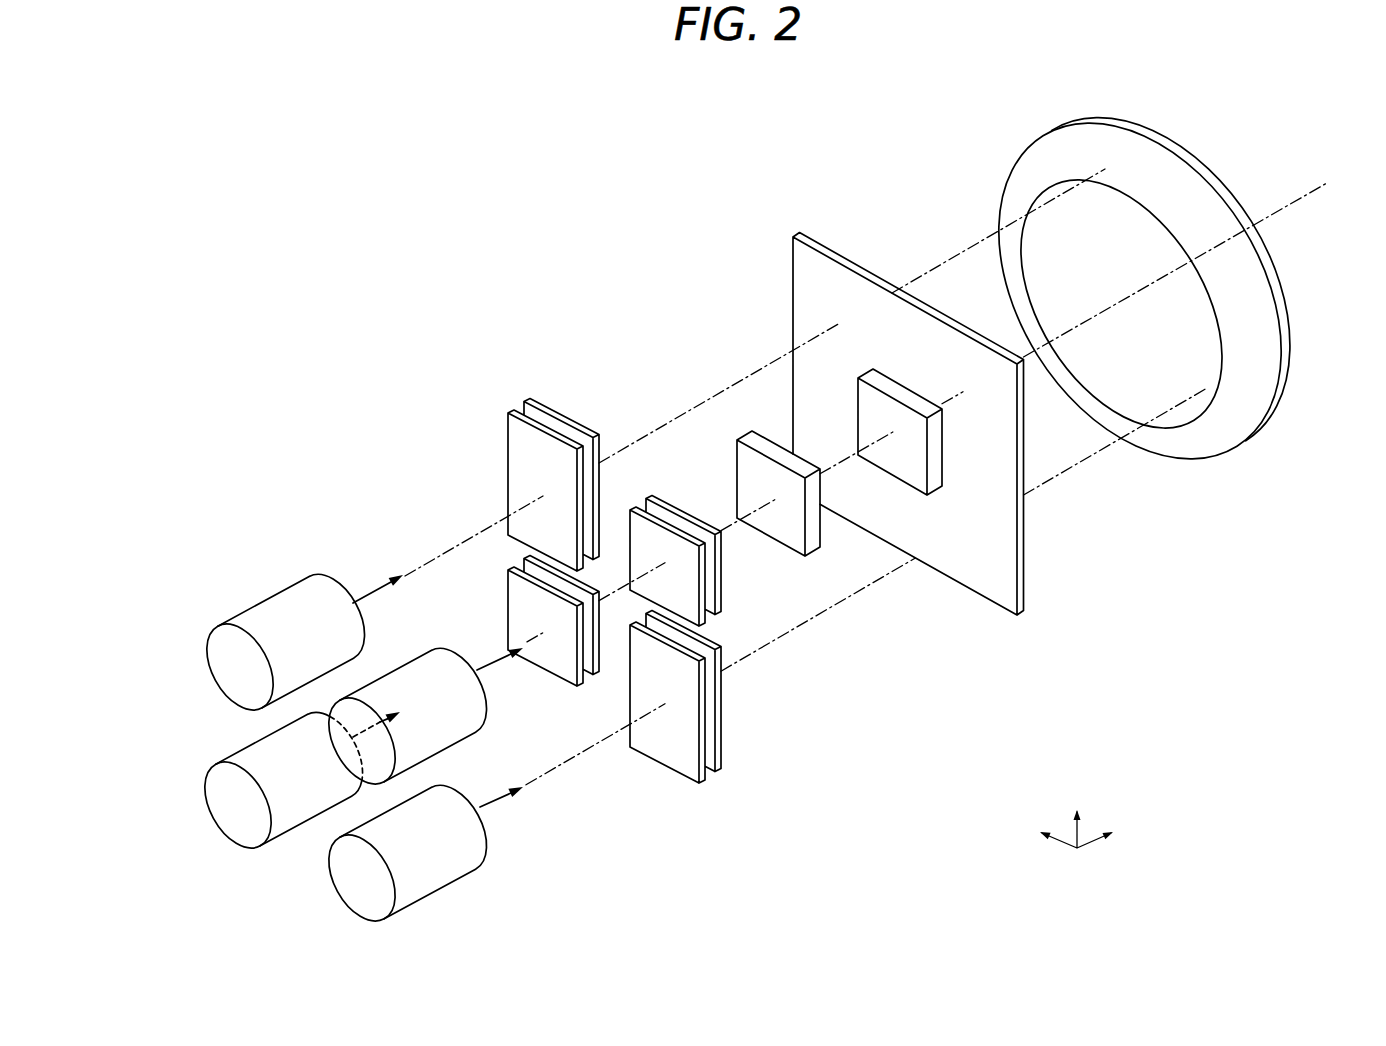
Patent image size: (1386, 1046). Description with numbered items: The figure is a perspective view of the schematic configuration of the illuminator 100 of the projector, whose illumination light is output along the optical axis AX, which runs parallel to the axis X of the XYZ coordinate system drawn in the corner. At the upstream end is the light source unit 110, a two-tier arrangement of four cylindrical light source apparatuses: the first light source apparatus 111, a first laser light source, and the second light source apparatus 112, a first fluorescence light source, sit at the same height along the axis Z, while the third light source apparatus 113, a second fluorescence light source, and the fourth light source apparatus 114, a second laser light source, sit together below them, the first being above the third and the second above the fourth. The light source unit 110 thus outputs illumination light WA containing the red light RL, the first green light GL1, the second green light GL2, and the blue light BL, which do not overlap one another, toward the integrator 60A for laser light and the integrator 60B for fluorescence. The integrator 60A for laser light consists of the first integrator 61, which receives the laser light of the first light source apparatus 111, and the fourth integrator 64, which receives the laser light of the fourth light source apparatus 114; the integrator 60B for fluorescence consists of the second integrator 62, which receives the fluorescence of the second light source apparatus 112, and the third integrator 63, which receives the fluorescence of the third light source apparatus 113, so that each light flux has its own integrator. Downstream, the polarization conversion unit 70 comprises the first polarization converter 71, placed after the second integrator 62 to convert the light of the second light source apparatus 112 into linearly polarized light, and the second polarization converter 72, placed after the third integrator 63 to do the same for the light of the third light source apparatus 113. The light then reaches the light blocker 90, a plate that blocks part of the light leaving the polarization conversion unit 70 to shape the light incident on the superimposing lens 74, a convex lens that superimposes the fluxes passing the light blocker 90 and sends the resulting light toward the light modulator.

The illuminator 100 is at (547, 253).
The light source unit 110 is at (359, 747).
The first light source apparatus 111 is at (248, 618).
The second light source apparatus 112 is at (395, 682).
The third light source apparatus 113 is at (248, 757).
The fourth light source apparatus 114 is at (440, 870).
The integrator for laser light 60A is at (640, 576).
The integrator for fluorescence 60B is at (637, 581).
The first integrator 61 is at (507, 407).
The second integrator 62 is at (722, 610).
The third integrator 63 is at (506, 566).
The fourth integrator 64 is at (722, 762).
The polarization conversion unit 70 is at (842, 481).
The first polarization converter 71 is at (935, 470).
The second polarization converter 72 is at (737, 473).
The light blocker 90 is at (853, 268).
The superimposing lens 74 is at (1197, 172).
The optical axis AX is at (1297, 203).
The red light RL is at (368, 593).
The first green light GL1 is at (500, 665).
The second green light GL2 is at (367, 731).
The blue light BL is at (492, 806).